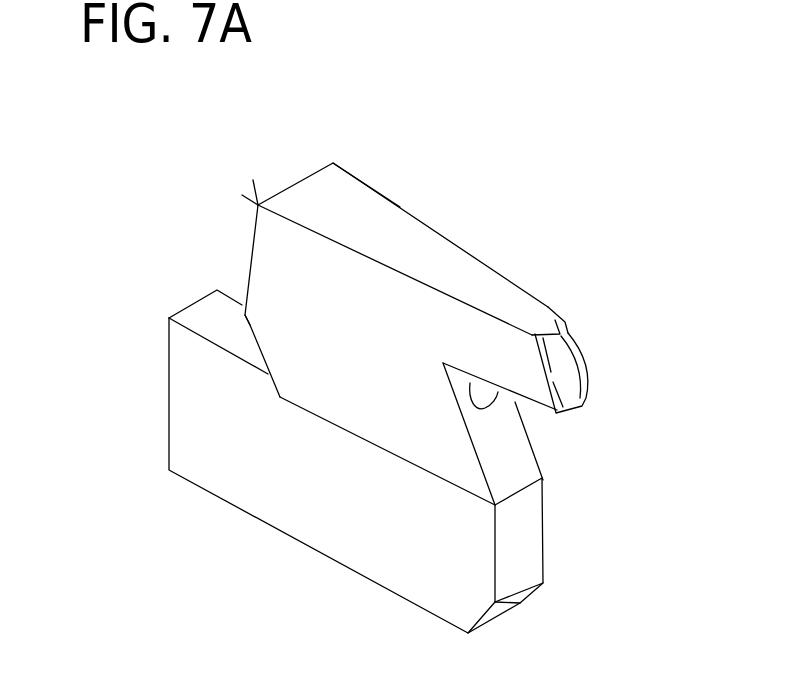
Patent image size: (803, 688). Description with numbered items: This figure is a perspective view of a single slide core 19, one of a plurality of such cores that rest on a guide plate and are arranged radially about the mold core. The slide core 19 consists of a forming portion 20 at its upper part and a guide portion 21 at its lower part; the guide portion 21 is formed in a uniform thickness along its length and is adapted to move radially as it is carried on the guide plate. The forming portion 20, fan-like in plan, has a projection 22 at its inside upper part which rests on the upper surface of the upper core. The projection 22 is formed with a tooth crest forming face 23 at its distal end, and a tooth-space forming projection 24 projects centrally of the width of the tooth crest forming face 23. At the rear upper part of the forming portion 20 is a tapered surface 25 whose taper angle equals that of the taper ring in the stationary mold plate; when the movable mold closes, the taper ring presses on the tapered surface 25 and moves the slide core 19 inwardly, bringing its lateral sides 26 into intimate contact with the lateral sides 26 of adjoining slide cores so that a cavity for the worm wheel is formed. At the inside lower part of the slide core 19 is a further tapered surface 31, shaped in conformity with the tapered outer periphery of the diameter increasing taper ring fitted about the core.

The slide core 19 is at (256, 204).
The forming portion 20 is at (460, 263).
The guide portion 21 is at (183, 398).
The projection 22 is at (535, 312).
The tooth crest forming face 23 is at (565, 413).
The tooth-space forming projection 24 is at (582, 363).
The tapered surface 25 is at (250, 268).
The lateral sides 26 is at (338, 273).
The tapered surface 31 is at (520, 603).